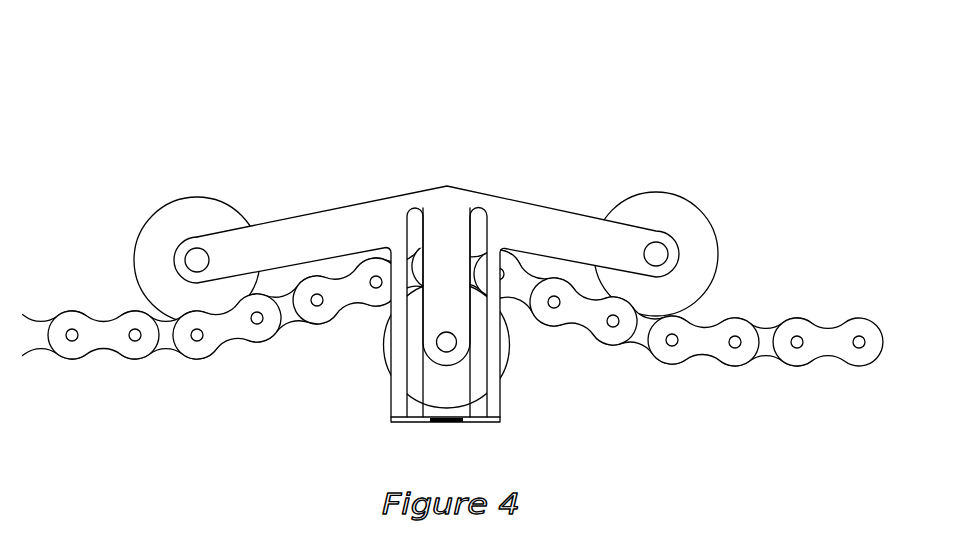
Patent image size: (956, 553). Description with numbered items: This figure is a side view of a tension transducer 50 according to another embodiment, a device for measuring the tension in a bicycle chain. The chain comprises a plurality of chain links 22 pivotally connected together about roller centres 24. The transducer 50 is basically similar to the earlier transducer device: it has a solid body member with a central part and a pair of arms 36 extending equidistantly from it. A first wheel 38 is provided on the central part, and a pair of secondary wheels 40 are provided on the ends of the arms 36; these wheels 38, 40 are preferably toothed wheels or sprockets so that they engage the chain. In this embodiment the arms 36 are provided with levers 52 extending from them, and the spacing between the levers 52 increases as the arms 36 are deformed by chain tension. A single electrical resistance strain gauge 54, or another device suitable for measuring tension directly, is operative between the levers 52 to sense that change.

The chain link 22 is at (108, 335).
The roller centre 24 is at (683, 332).
The arm 36 is at (330, 228).
The first wheel 38 is at (463, 377).
The secondary wheel 40 is at (172, 240).
The transducer 50 is at (441, 247).
The lever 52 is at (400, 398).
The electrical resistance strain gauge 54 is at (445, 423).